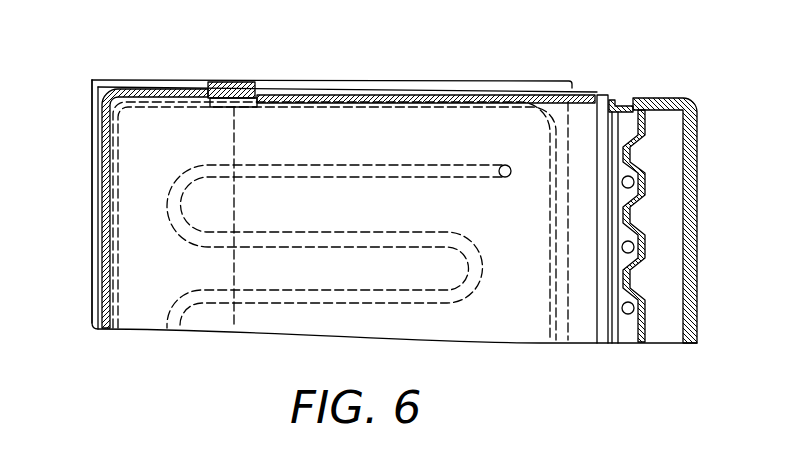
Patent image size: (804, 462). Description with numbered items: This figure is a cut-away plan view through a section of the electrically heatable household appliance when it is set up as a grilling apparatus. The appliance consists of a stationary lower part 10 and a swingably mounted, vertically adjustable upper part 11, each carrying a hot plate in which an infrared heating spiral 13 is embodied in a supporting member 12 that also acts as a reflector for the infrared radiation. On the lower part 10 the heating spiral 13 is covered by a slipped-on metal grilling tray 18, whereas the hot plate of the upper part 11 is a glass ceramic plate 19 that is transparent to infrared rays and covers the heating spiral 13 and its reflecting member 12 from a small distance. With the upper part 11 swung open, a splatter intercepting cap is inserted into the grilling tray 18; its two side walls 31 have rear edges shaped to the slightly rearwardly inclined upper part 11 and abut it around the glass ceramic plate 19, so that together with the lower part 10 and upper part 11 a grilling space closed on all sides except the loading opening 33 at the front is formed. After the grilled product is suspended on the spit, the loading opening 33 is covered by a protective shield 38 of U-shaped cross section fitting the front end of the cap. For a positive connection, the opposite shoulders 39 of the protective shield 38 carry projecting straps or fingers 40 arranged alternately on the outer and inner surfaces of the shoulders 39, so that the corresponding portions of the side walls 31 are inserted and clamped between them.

The lower part 10 is at (151, 72).
The upper part 11 is at (696, 236).
The supporting member 12 is at (647, 183).
The infrared heating spiral 13 is at (424, 163).
The grilling tray 18 is at (433, 82).
The glass ceramic plate 19 is at (382, 217).
The side walls 31 is at (286, 94).
The loading opening 33 is at (233, 138).
The protective shield 38 is at (99, 224).
The shoulders 39 is at (175, 91).
The projecting straps or fingers 40 is at (233, 86).